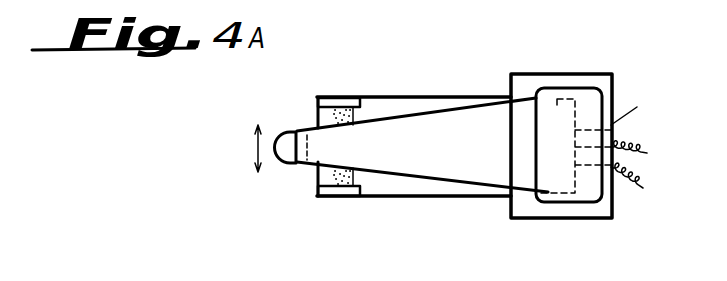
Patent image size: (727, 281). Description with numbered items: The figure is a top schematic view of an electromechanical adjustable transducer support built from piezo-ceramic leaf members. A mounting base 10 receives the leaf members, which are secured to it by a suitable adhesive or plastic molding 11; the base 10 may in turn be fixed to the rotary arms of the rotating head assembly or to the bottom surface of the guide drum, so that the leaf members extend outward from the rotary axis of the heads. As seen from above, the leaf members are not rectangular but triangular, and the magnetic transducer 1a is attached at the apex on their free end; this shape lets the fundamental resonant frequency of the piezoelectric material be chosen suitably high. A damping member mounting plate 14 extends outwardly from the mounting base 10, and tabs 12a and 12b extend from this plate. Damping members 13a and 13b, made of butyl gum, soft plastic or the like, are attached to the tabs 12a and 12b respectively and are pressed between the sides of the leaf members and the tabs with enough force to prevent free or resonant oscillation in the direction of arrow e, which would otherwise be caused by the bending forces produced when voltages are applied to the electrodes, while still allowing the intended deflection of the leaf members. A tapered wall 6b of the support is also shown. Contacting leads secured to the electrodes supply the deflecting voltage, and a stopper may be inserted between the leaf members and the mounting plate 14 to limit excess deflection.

The magnetic transducer 1a is at (281, 165).
The tapered wall 6b is at (465, 124).
The mounting base 10 is at (572, 219).
The adhesive or plastic molding 11 is at (553, 107).
The tab 12a is at (340, 197).
The tab 12b is at (333, 97).
The damping member 13a is at (356, 176).
The damping member 13b is at (354, 116).
The damping member mounting plate 14 is at (459, 187).
The arrow e is at (253, 141).